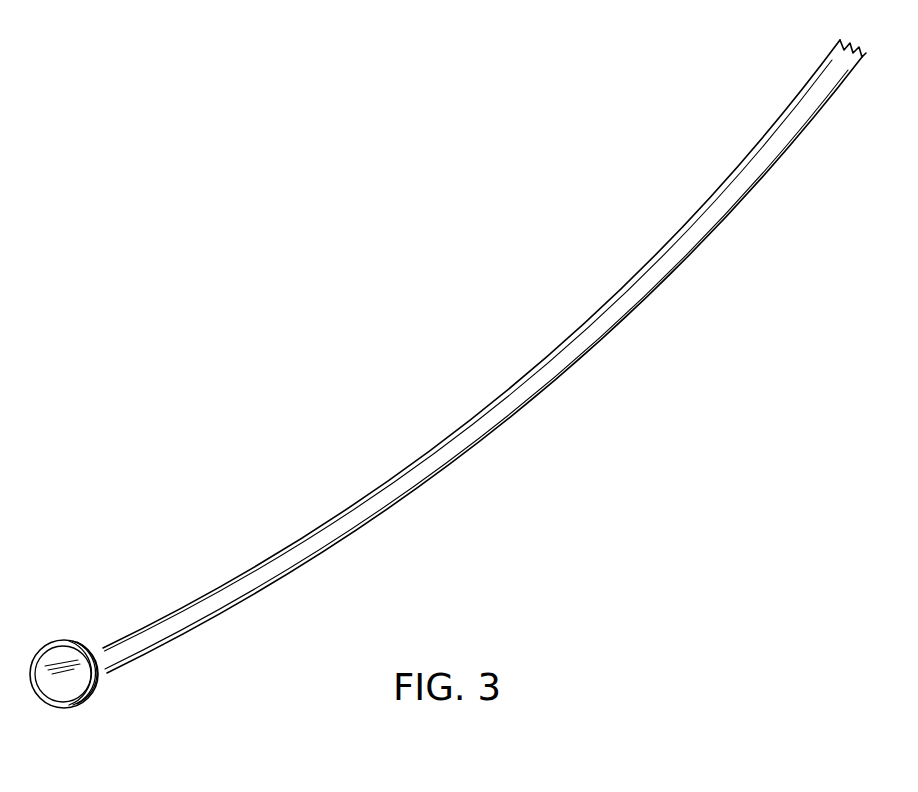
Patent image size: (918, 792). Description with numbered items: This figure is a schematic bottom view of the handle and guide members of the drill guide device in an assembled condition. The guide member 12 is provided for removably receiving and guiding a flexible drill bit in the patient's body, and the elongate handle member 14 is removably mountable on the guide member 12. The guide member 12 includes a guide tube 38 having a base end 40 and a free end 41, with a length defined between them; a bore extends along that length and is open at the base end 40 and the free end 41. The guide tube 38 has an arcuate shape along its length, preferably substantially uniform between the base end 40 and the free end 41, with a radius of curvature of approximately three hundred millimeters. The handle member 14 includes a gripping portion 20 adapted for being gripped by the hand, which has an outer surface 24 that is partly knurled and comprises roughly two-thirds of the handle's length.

The guide member 12 is at (543, 375).
The elongate handle member 14 is at (62, 682).
The gripping portion 20 is at (55, 672).
The outer surface 24 is at (484, 786).
The guide tube 38 is at (433, 480).
The base end 40 is at (127, 660).
The free end 41 is at (857, 48).